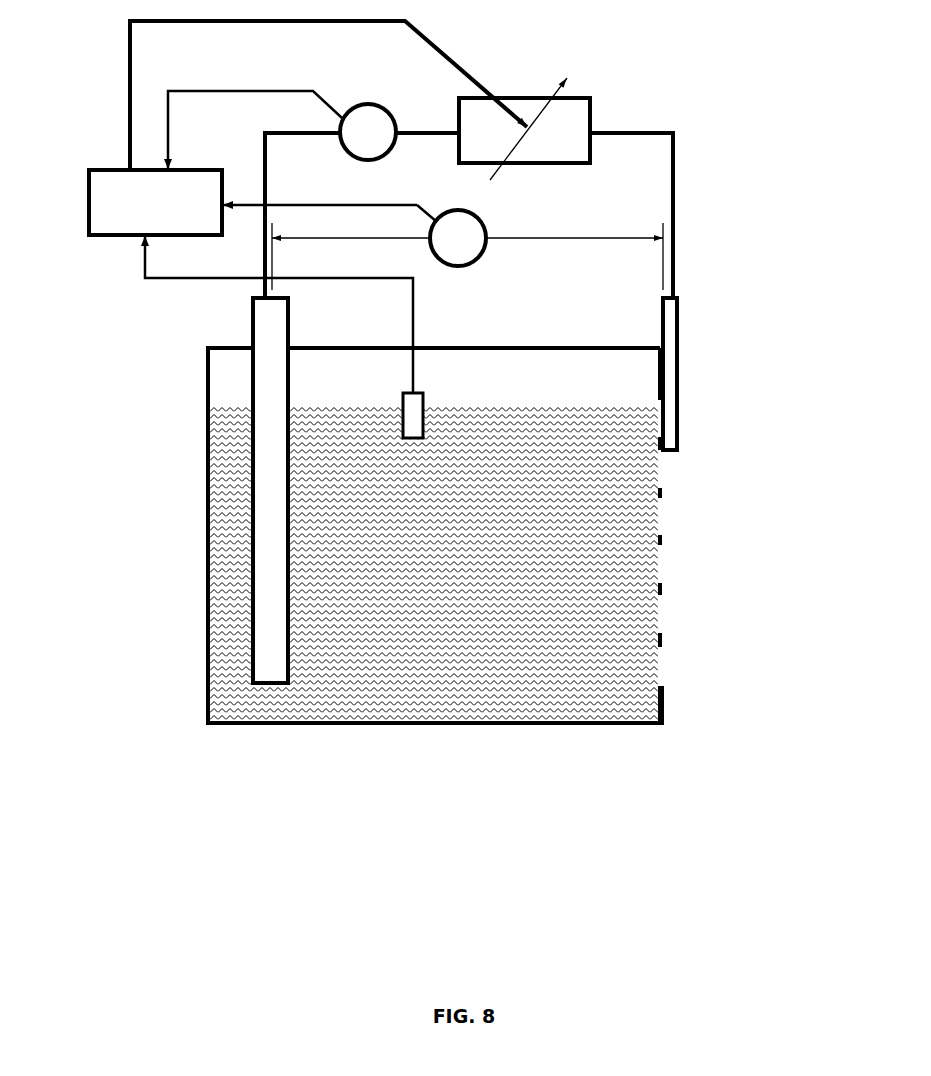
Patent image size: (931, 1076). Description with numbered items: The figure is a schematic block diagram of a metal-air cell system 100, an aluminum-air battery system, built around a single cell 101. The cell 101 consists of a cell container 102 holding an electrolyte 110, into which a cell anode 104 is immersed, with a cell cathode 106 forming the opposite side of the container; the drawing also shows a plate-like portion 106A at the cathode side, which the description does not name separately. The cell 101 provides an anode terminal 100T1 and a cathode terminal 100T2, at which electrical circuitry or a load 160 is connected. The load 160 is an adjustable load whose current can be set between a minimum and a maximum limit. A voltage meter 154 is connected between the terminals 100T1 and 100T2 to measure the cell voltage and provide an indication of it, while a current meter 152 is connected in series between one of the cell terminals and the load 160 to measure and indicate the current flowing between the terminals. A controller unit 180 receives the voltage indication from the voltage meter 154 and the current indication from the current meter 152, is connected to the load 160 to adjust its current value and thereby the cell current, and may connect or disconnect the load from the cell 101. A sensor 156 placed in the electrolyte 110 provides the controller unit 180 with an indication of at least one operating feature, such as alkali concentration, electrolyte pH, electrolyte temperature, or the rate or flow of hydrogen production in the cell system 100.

The metal-air cell system 100 is at (102, 882).
The cell 101 is at (210, 758).
The cell container 102 is at (593, 727).
The cell anode 104 is at (270, 563).
The cell cathode 106 is at (667, 565).
The cathode plate 106A is at (677, 402).
The electrolyte 110 is at (440, 647).
The current meter 152 is at (347, 110).
The voltage meter 154 is at (490, 230).
The sensor 156 is at (423, 398).
The load 160 is at (537, 97).
The controller unit 180 is at (308, 128).
The anode terminal 100T1 is at (270, 312).
The cathode terminal 100T2 is at (675, 310).